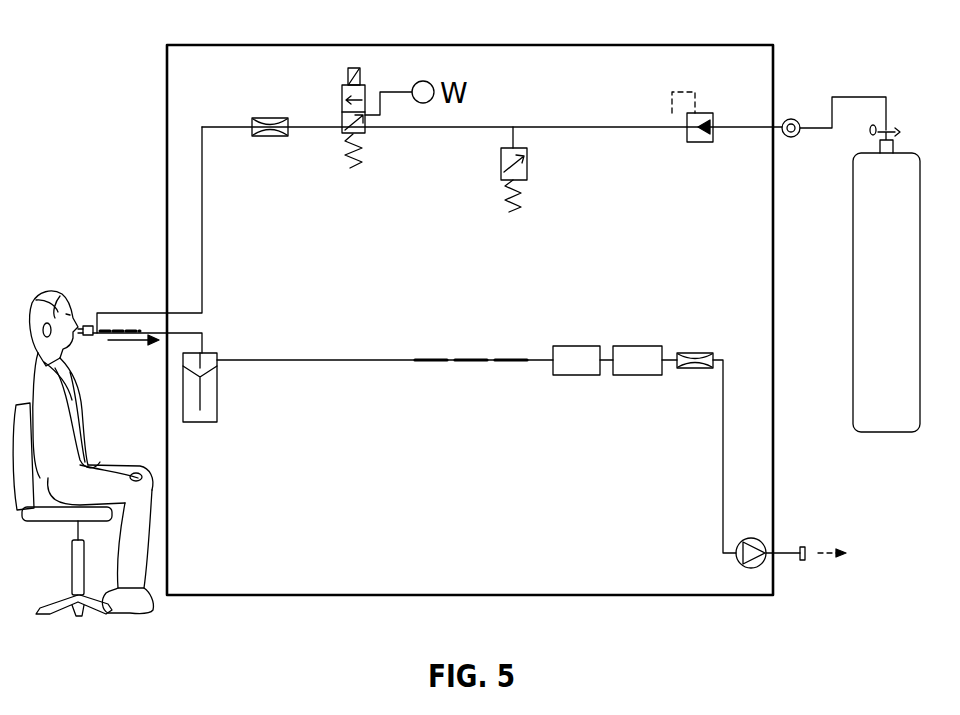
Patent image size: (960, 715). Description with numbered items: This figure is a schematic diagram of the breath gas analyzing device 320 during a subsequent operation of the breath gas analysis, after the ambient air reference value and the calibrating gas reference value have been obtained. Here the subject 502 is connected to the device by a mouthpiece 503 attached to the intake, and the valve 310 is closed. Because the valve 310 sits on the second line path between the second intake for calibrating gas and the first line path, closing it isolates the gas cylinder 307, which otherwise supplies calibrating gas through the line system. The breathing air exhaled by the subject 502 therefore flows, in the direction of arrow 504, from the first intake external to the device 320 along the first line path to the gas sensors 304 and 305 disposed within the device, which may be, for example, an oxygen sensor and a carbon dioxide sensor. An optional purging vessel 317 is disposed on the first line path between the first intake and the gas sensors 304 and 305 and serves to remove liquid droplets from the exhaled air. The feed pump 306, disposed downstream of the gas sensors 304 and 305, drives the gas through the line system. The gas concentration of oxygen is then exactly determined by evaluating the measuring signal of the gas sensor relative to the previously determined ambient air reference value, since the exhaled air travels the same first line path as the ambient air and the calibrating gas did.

The breath gas analyzing device 320 is at (470, 45).
The valve 310 is at (343, 136).
The purging vessel 317 is at (218, 386).
The gas sensor 304 is at (577, 376).
The gas sensor 305 is at (640, 376).
The feed pump 306 is at (737, 560).
The gas cylinder 307 is at (872, 433).
The subject 502 is at (50, 292).
The mouthpiece 503 is at (90, 325).
The arrow indicating direction of exhaled breathing air 504 is at (146, 346).